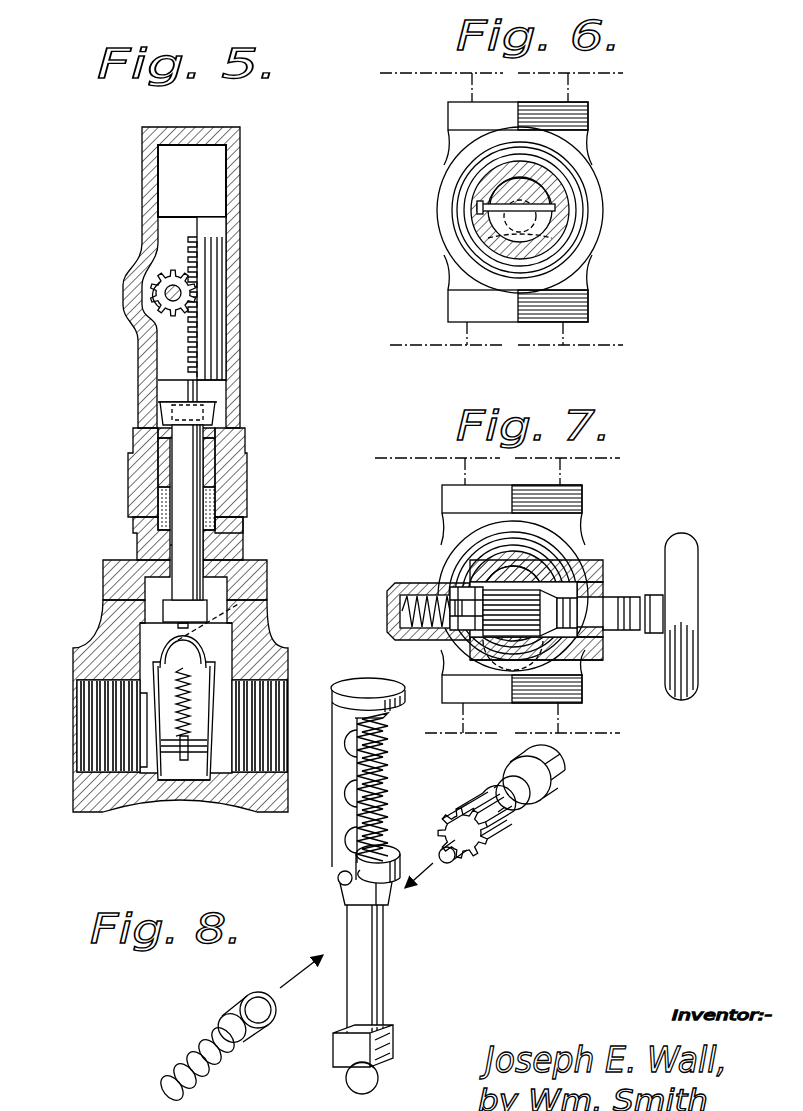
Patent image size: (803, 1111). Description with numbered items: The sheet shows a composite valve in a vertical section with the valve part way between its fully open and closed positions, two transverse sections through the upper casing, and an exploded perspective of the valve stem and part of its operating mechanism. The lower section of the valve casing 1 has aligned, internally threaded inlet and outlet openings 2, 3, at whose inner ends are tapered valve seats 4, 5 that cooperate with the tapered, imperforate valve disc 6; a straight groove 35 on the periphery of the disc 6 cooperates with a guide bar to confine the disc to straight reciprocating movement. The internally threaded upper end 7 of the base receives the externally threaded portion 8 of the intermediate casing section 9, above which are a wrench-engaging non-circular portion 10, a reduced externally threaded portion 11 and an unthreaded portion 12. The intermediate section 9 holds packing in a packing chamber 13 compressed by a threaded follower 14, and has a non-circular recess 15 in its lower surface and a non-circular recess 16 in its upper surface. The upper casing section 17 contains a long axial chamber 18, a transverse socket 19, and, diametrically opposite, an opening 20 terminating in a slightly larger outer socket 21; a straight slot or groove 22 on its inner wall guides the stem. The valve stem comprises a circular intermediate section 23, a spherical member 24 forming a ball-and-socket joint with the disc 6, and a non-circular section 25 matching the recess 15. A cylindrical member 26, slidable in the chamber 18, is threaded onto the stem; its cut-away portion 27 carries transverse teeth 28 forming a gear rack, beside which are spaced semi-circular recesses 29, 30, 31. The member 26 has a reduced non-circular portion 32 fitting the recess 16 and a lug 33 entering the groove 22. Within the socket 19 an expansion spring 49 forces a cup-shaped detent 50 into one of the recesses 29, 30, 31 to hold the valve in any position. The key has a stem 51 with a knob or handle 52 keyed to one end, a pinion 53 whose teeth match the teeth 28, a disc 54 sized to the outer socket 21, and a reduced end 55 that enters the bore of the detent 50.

In FIG. 5, the lower section of the valve casing 1 is at (285, 660).
In FIG. 5, the inlet opening 2 is at (80, 712).
In FIG. 5, the outlet opening 3 is at (284, 718).
In FIG. 5, the valve seat 4 is at (155, 730).
In FIG. 5, the valve seat 5 is at (210, 733).
In FIG. 5, the valve disc 6 is at (187, 706).
In FIG. 5, the upper end of the base portion 7 is at (256, 602).
In FIG. 5, the lowermost externally threaded portion 8 is at (262, 586).
In FIG. 5, the intermediate casing section 9 is at (232, 546).
In FIG. 5, the non-circular portion 10 is at (132, 556).
In FIG. 5, the reduced externally-threaded portion 11 is at (212, 504).
In FIG. 5, the unthreaded portion 12 is at (241, 462).
In FIG. 5, the packing recess or chamber 13 is at (213, 480).
In FIG. 5, the threaded nut or follower 14 is at (214, 446).
In FIG. 5, the non-circular recess 15 is at (205, 556).
In FIG. 5, the non-circular recess 16 is at (237, 410).
In FIG. 5, the upper section of the valve casing 17 is at (242, 278).
In FIG. 5, the chamber 18 is at (192, 181).
In FIG. 7, the socket 19 is at (388, 612).
In FIG. 7, the opening 20 is at (585, 572).
In FIG. 7, the outer socket 21 is at (596, 647).
In FIG. 6, the slot or groove 22 is at (477, 208).
In FIG. 5, the intermediate section of the valve stem 23 is at (233, 490).
In FIG. 8, the intermediate section of the valve stem 23 is at (368, 958).
In FIG. 5, the substantially spherical member 24 is at (227, 627).
In FIG. 8, the substantially spherical member 24 is at (378, 1080).
In FIG. 5, the section of non-circular cross-section 25 is at (185, 605).
In FIG. 8, the section of non-circular cross-section 25 is at (392, 1032).
In FIG. 5, the substantially cylindrical member 26 is at (206, 338).
In FIG. 6, the substantially cylindrical member 26 is at (560, 172).
In FIG. 7, the substantially cylindrical member 26 is at (513, 610).
In FIG. 8, the substantially cylindrical member 26 is at (375, 684).
In FIG. 5, the cut away portion 27 is at (180, 357).
In FIG. 6, the cut away portion 27 is at (540, 229).
In FIG. 8, the cut away portion 27 is at (390, 766).
In FIG. 5, the transverse teeth 28 is at (190, 250).
In FIG. 6, the transverse teeth 28 is at (565, 192).
In FIG. 8, the transverse teeth 28 is at (381, 822).
In FIG. 5, the semi-circular recess 29 is at (288, 748).
In FIG. 8, the semi-circular recess 29 is at (347, 744).
In FIG. 5, the semi-circular recess 30 is at (288, 802).
In FIG. 8, the semi-circular recess 30 is at (347, 794).
In FIG. 8, the semi-circular recess 31 is at (347, 840).
In FIG. 5, the reduced non-circular portion 32 is at (226, 386).
In FIG. 8, the reduced non-circular portion 32 is at (388, 898).
In FIG. 8, the lug or projection 33 is at (338, 880).
In FIG. 5, the straight groove 35 is at (147, 700).
In FIG. 7, the coiled expansion spring 49 is at (405, 598).
In FIG. 8, the coiled expansion spring 49 is at (190, 1086).
In FIG. 7, the cup-shaped detent member 50 is at (455, 610).
In FIG. 8, the cup-shaped detent member 50 is at (236, 1004).
In FIG. 7, the stem 51 is at (628, 605).
In FIG. 8, the stem 51 is at (548, 770).
In FIG. 7, the knob or handle 52 is at (690, 580).
In FIG. 5, the pinion 53 is at (150, 291).
In FIG. 7, the pinion 53 is at (530, 585).
In FIG. 8, the pinion 53 is at (488, 832).
In FIG. 7, the disc 54 is at (605, 598).
In FIG. 8, the disc 54 is at (540, 790).
In FIG. 7, the reduced end 55 is at (470, 600).
In FIG. 8, the reduced end 55 is at (470, 860).